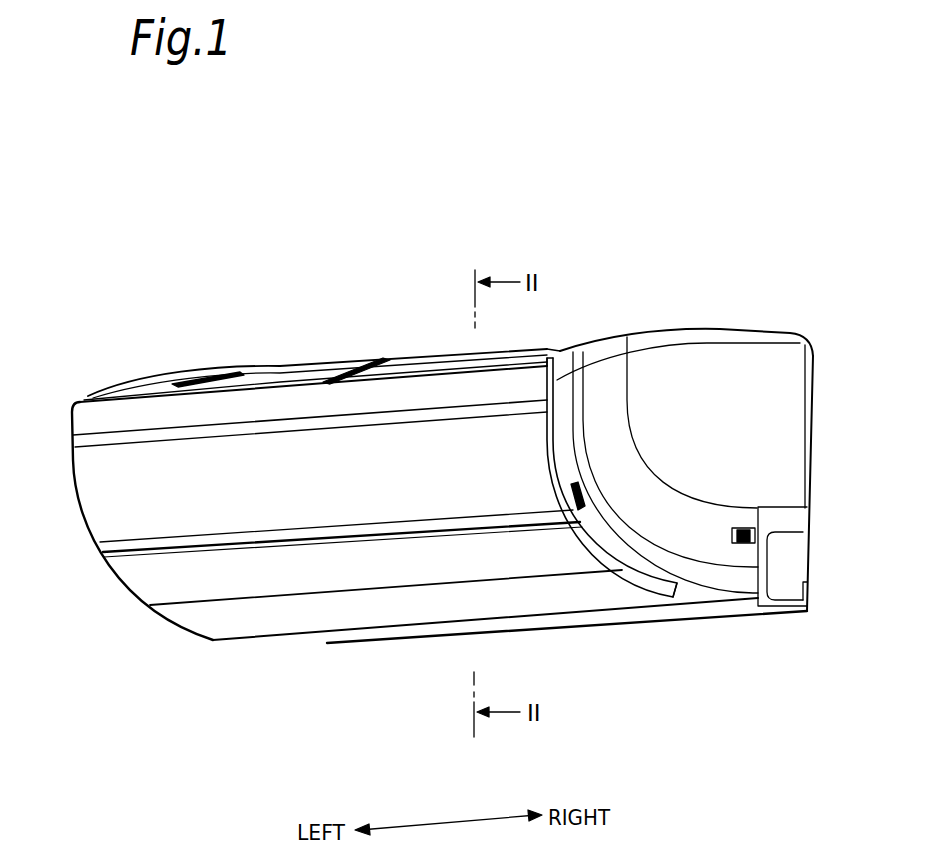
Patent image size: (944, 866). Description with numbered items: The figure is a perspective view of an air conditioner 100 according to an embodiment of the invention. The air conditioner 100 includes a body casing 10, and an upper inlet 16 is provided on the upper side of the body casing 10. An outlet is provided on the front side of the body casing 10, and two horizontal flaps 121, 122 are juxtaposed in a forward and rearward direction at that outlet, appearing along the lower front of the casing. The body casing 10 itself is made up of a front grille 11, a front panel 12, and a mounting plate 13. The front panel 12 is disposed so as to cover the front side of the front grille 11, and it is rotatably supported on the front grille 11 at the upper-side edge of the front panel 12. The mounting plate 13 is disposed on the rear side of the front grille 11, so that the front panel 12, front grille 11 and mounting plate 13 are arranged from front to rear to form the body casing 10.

The air conditioner 100 is at (661, 210).
The body casing 10 is at (717, 313).
The front grille 11 is at (660, 380).
The front panel 12 is at (103, 498).
The horizontal flap 121 is at (147, 583).
The horizontal flap 122 is at (197, 618).
The mounting plate 13 is at (813, 432).
The upper inlet 16 is at (293, 367).